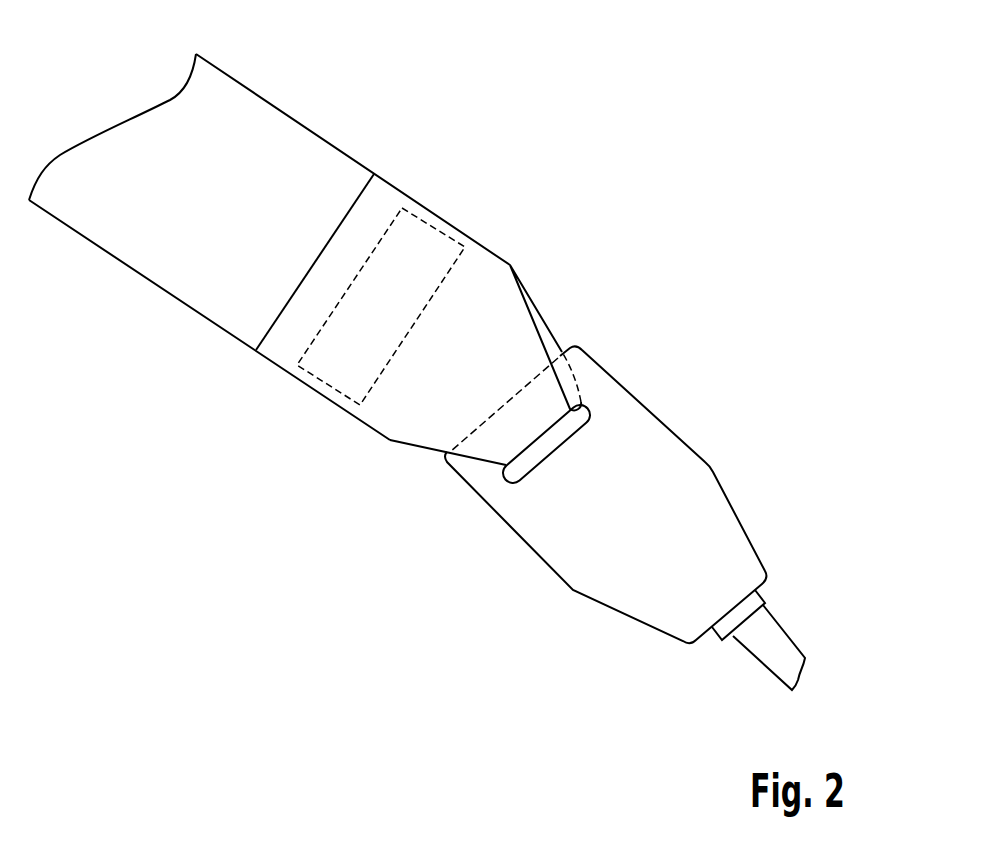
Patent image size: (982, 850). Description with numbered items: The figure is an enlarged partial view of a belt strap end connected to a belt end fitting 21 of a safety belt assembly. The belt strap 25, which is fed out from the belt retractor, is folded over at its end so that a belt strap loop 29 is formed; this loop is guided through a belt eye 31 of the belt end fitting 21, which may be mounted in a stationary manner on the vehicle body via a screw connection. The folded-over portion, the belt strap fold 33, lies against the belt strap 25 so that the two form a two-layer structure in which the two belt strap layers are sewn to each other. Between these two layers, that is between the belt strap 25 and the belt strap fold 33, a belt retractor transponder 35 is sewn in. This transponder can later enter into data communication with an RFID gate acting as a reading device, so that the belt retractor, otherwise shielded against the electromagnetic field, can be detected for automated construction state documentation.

The belt end fitting 21 is at (654, 529).
The belt strap 25 is at (292, 115).
The belt strap loop 29 is at (526, 304).
The belt eye 31 is at (593, 420).
The belt strap fold 33 is at (348, 196).
The belt retractor transponder 35 is at (391, 225).